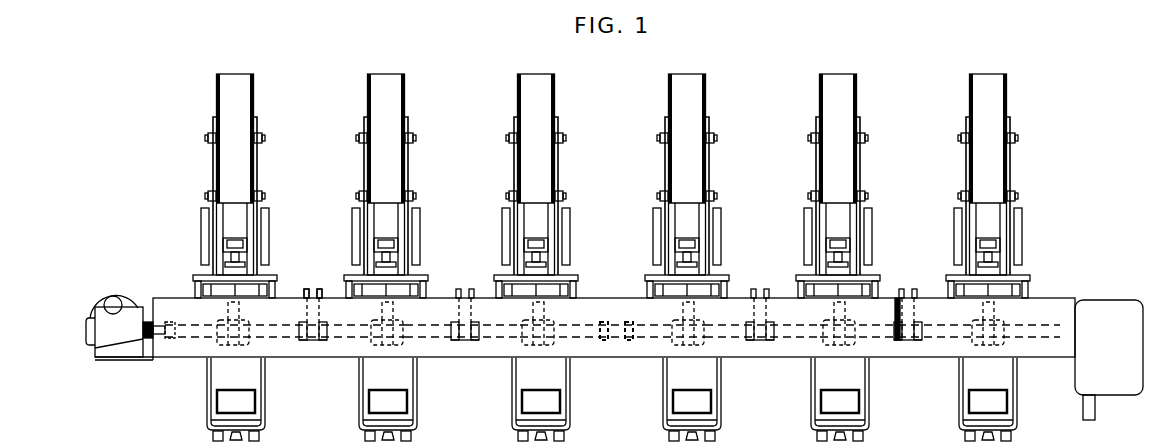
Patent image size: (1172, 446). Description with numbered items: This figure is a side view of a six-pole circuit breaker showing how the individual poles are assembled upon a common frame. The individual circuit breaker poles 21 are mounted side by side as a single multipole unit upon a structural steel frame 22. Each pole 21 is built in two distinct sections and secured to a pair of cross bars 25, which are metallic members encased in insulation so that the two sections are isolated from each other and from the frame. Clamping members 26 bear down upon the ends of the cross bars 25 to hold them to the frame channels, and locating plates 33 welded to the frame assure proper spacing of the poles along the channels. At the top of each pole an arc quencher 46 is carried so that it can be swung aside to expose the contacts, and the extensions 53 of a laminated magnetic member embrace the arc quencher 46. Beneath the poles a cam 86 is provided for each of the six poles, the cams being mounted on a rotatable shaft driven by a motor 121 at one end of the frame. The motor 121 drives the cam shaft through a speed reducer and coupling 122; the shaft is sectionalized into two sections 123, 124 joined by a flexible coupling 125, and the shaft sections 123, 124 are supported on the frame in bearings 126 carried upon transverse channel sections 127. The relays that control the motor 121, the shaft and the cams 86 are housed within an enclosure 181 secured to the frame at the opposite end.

The circuit breaker pole 21 is at (839, 175).
The structural steel frame 22 is at (1054, 298).
The cross bar 25 is at (950, 290).
The clamping member 26 is at (1022, 275).
The locating plate 33 is at (957, 292).
The arc quencher 46 is at (828, 74).
The extension 53 is at (806, 210).
The cam 86 is at (240, 310).
The motor 121 is at (125, 265).
The coupling 122 is at (170, 345).
The shaft section 123 is at (515, 335).
The shaft section 124 is at (733, 337).
The flexible coupling 125 is at (612, 340).
The bearing 126 is at (310, 340).
The transverse channel section 127 is at (305, 292).
The enclosure 181 is at (1160, 282).